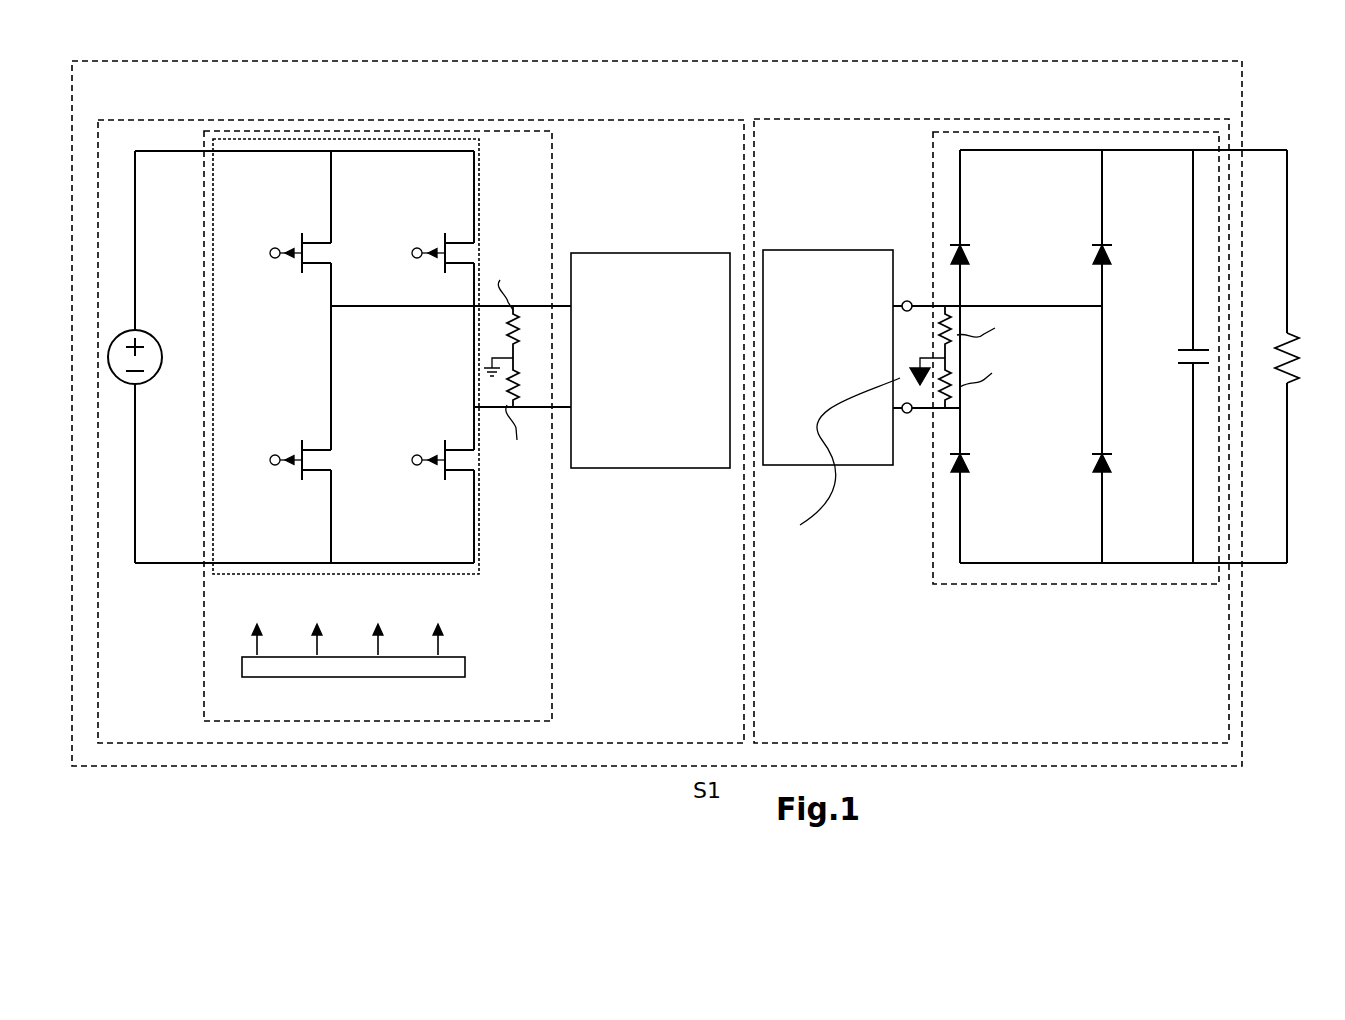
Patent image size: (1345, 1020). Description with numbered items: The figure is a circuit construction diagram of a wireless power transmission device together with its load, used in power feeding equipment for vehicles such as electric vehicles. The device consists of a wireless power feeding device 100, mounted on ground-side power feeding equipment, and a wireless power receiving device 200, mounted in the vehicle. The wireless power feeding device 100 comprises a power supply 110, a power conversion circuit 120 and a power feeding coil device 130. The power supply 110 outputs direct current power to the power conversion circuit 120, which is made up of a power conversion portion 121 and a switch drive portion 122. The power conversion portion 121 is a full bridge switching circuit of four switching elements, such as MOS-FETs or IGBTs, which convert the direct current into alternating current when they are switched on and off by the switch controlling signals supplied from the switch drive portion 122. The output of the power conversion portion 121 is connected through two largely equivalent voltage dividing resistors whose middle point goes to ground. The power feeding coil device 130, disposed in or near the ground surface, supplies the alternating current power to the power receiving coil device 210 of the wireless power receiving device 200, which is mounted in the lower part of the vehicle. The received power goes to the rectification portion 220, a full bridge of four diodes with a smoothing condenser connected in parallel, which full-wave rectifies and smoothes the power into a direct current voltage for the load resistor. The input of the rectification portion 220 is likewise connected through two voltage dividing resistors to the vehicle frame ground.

The wireless power feeding device 100 is at (423, 118).
The power supply 110 is at (145, 325).
The power conversion circuit 120 is at (552, 165).
The power conversion portion 121 is at (213, 388).
The switch drive portion 122 is at (318, 677).
The power feeding coil device 130 is at (608, 252).
The wireless power receiving device 200 is at (963, 118).
The power receiving coil device 210 is at (800, 250).
The rectification portion 220 is at (1058, 586).